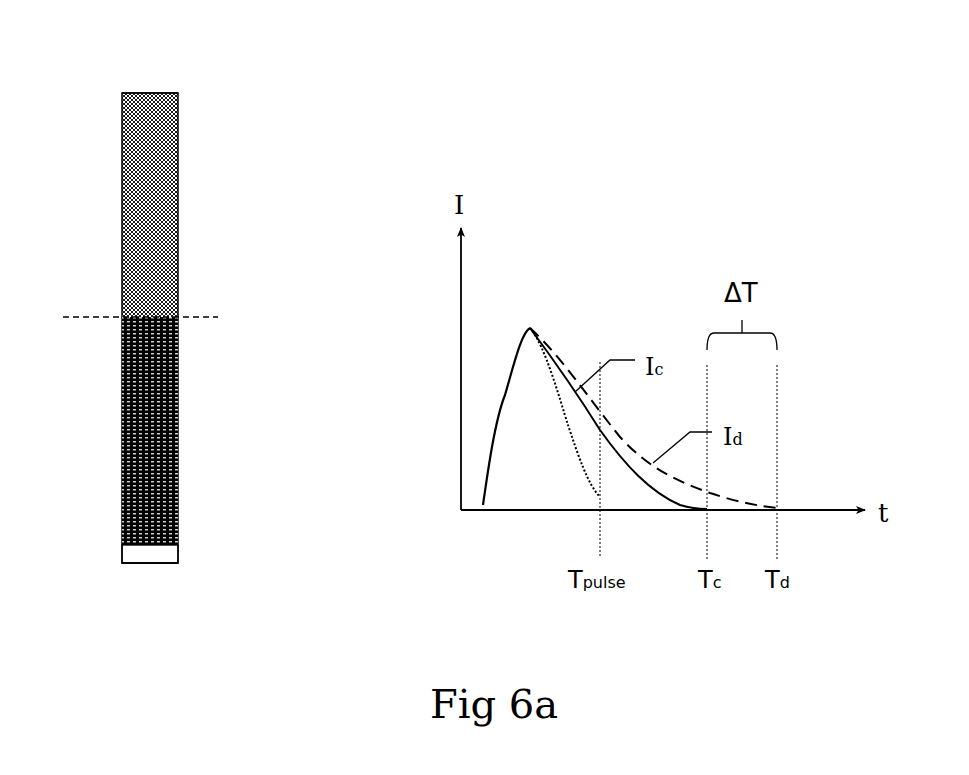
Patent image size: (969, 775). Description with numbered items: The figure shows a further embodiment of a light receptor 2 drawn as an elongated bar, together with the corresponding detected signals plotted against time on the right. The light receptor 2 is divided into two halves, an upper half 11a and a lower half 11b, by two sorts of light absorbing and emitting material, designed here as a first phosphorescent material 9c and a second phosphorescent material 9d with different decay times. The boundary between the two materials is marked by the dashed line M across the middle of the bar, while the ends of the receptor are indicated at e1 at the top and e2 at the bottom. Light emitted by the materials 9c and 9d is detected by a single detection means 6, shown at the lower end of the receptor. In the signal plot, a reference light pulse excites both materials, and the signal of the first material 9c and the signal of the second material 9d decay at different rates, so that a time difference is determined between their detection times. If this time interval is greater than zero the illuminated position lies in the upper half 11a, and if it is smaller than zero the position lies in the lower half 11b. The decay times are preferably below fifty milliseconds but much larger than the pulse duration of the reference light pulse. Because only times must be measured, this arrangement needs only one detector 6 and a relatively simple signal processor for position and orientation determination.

The light receptor 2 is at (174, 317).
The first phosphorescent material 9c is at (147, 190).
The second phosphorescent material 9d is at (147, 385).
The upper half 11a is at (169, 205).
The lower half 11b is at (175, 431).
The detection means 6 is at (155, 555).
The first end e1 is at (113, 62).
The second end e2 is at (120, 575).
The middle plane M is at (161, 318).